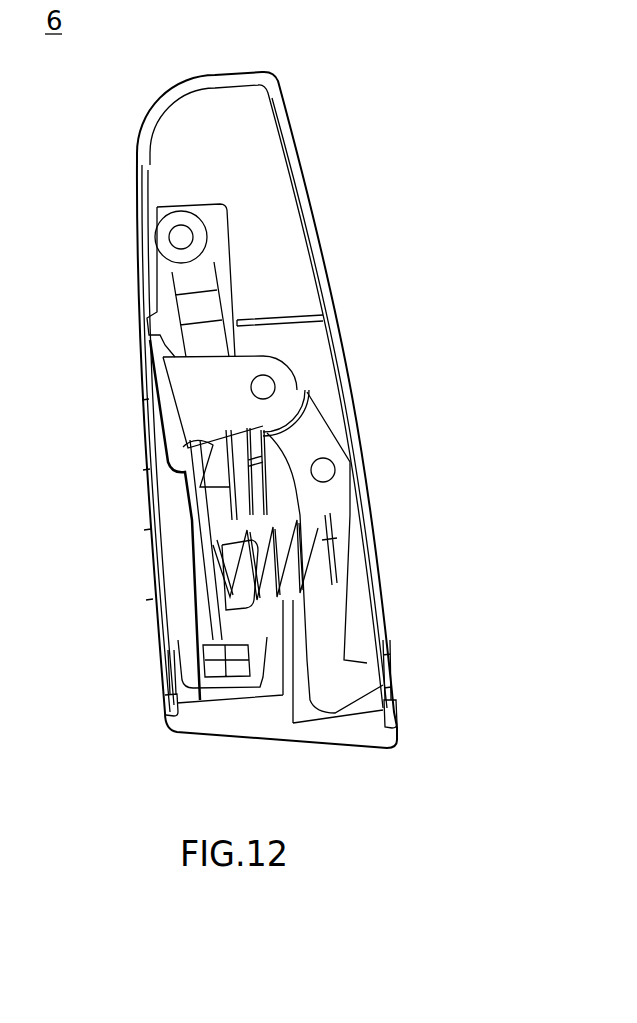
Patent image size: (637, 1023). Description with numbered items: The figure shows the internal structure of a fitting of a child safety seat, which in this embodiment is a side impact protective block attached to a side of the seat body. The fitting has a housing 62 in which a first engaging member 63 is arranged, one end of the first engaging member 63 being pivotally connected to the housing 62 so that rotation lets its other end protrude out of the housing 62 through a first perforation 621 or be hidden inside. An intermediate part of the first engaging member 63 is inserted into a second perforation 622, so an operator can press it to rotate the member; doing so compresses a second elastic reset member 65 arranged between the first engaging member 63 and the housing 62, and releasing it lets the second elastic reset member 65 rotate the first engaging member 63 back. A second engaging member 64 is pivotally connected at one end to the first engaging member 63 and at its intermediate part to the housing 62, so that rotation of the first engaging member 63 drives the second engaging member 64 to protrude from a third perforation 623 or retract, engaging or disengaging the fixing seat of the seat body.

The housing 62 is at (307, 212).
The first perforation 621 is at (160, 684).
The second perforation 622 is at (143, 438).
The third perforation 623 is at (403, 680).
The first engaging member 63 is at (208, 572).
The second engaging member 64 is at (307, 428).
The second elastic reset member 65 is at (318, 563).